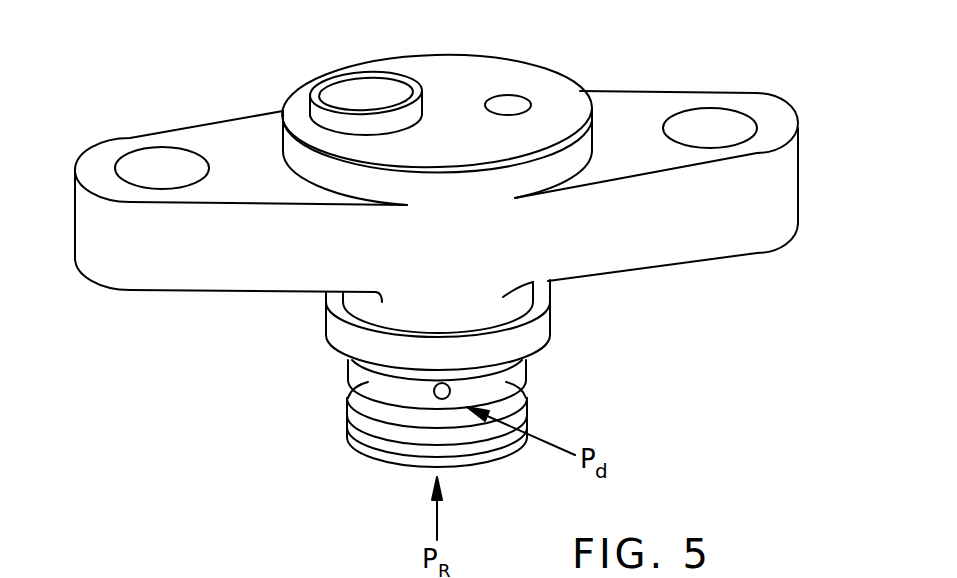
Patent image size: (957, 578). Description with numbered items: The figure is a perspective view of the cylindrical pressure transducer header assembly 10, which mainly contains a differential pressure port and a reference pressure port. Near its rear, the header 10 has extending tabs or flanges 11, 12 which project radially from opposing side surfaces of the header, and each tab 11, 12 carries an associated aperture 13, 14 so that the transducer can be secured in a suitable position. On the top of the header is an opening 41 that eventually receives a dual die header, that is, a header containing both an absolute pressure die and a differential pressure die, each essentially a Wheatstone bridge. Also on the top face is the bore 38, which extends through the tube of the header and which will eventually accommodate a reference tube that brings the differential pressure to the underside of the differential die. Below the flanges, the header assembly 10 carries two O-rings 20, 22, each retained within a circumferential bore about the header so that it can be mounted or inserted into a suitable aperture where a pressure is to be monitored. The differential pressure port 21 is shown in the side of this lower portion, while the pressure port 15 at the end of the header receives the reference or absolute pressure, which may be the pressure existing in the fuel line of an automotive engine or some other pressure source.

The pressure header assembly 10 is at (499, 29).
The extending tab 11 is at (787, 187).
The extending tab 12 is at (110, 273).
The aperture 13 is at (713, 124).
The aperture 14 is at (145, 170).
The pressure port 15 is at (368, 458).
The O-ring 20 is at (383, 407).
The differential pressure port 21 is at (437, 389).
The O-ring 22 is at (512, 306).
The bore 38 is at (512, 100).
The opening 41 is at (332, 93).